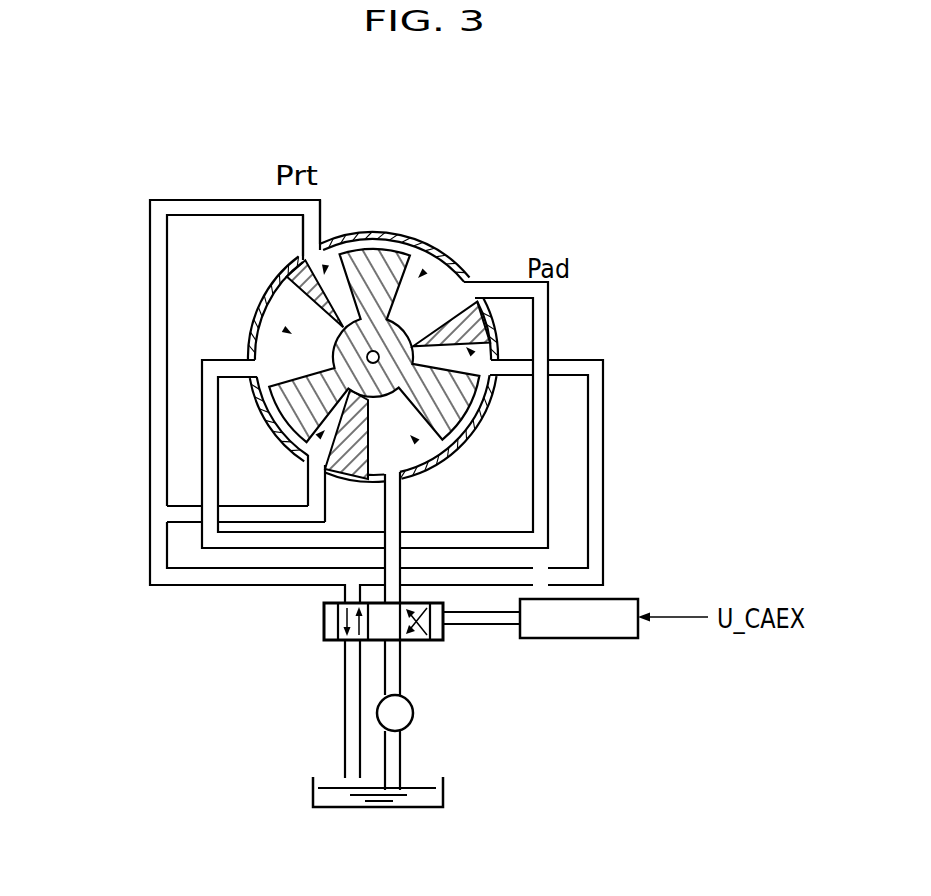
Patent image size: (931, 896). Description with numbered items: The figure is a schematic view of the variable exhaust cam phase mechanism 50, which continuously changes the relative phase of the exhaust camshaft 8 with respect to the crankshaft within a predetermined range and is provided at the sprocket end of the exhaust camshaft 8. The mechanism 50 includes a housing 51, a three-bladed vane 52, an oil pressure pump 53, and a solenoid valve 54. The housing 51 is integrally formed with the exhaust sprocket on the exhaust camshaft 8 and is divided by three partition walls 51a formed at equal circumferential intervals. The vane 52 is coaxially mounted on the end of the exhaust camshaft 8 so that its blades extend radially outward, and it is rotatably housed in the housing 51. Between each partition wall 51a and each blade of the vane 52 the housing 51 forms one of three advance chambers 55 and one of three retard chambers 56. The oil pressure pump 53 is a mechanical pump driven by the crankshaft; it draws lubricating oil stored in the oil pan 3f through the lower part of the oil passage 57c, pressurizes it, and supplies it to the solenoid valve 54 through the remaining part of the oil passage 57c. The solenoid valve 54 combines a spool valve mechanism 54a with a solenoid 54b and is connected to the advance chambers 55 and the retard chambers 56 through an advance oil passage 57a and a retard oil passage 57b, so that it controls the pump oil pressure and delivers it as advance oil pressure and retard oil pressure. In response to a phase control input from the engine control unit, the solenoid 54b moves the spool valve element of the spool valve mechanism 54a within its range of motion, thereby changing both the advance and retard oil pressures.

The variable exhaust cam phase mechanism 50 is at (424, 129).
The housing 51 is at (374, 300).
The partition walls 51a is at (288, 312).
The three-bladed vane 52 is at (375, 236).
The advance chambers 55 is at (424, 272).
The retard chambers 56 is at (326, 262).
The advance oil passage 57a is at (200, 398).
The retard oil passage 57b is at (148, 410).
The oil passage 57c is at (401, 666).
The solenoid valve 54 is at (458, 653).
The spool valve mechanism 54a is at (323, 622).
The solenoid 54b is at (582, 640).
The oil pressure pump 53 is at (413, 713).
The exhaust camshaft 8 is at (398, 346).
The oil pan 3f is at (380, 810).